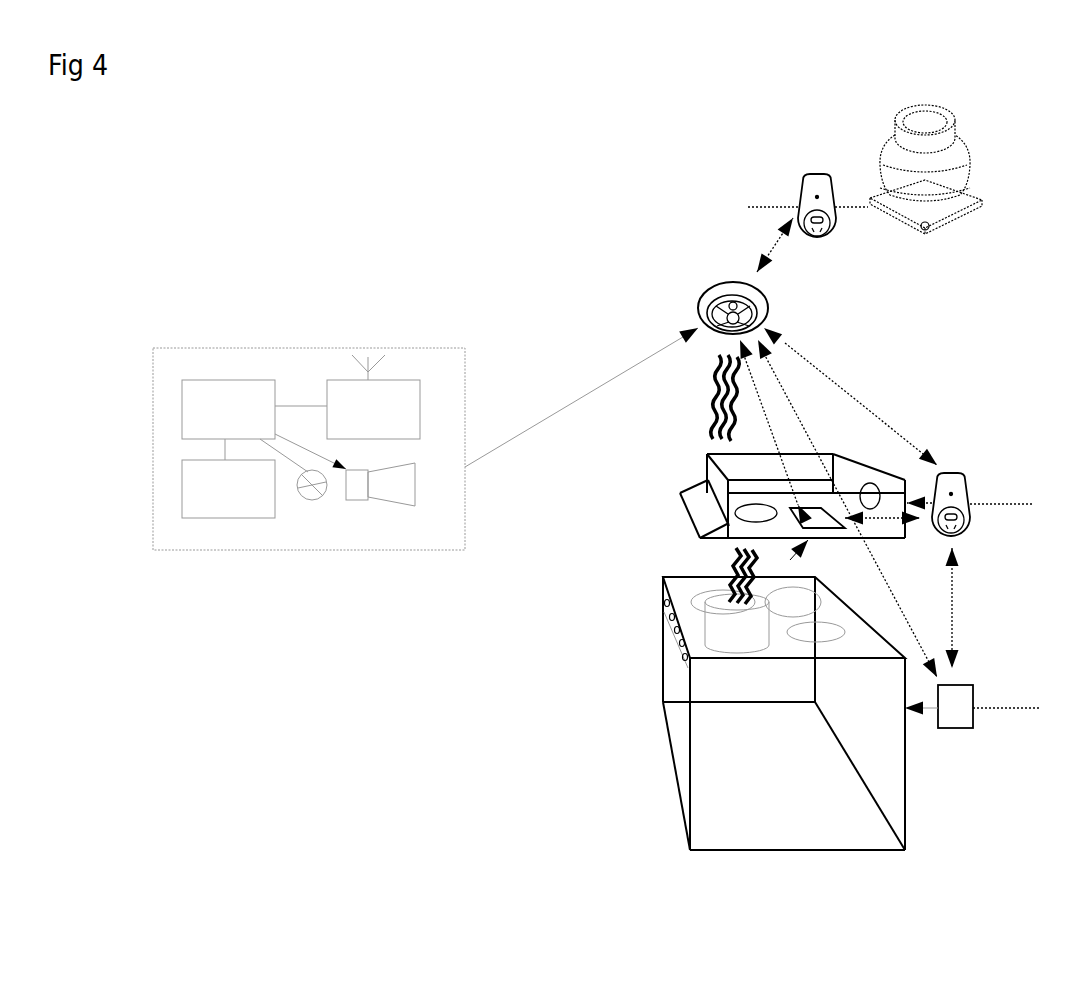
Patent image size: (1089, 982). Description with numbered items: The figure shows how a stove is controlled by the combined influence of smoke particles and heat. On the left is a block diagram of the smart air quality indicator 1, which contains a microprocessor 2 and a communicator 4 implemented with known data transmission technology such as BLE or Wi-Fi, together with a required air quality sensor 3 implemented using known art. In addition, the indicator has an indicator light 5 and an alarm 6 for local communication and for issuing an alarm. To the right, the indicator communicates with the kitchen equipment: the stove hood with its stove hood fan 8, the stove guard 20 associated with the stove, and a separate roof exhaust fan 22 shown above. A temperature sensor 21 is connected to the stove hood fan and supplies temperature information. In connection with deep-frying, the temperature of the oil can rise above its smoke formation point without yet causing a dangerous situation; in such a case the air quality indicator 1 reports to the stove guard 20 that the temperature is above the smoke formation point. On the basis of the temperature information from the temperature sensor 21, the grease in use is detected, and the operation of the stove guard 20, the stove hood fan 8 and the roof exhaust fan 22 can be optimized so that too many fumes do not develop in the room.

The smart air quality indicator 1 is at (153, 387).
The microprocessor 2 is at (182, 423).
The air quality sensor 3 is at (182, 487).
The communicator 4 is at (420, 399).
The indicator light 5 is at (346, 467).
The alarm 6 is at (415, 487).
The stove hood fan 8 is at (908, 505).
The stove guard 20 is at (972, 693).
The temperature sensor 21 is at (787, 523).
The roof exhaust fan 22 is at (912, 169).